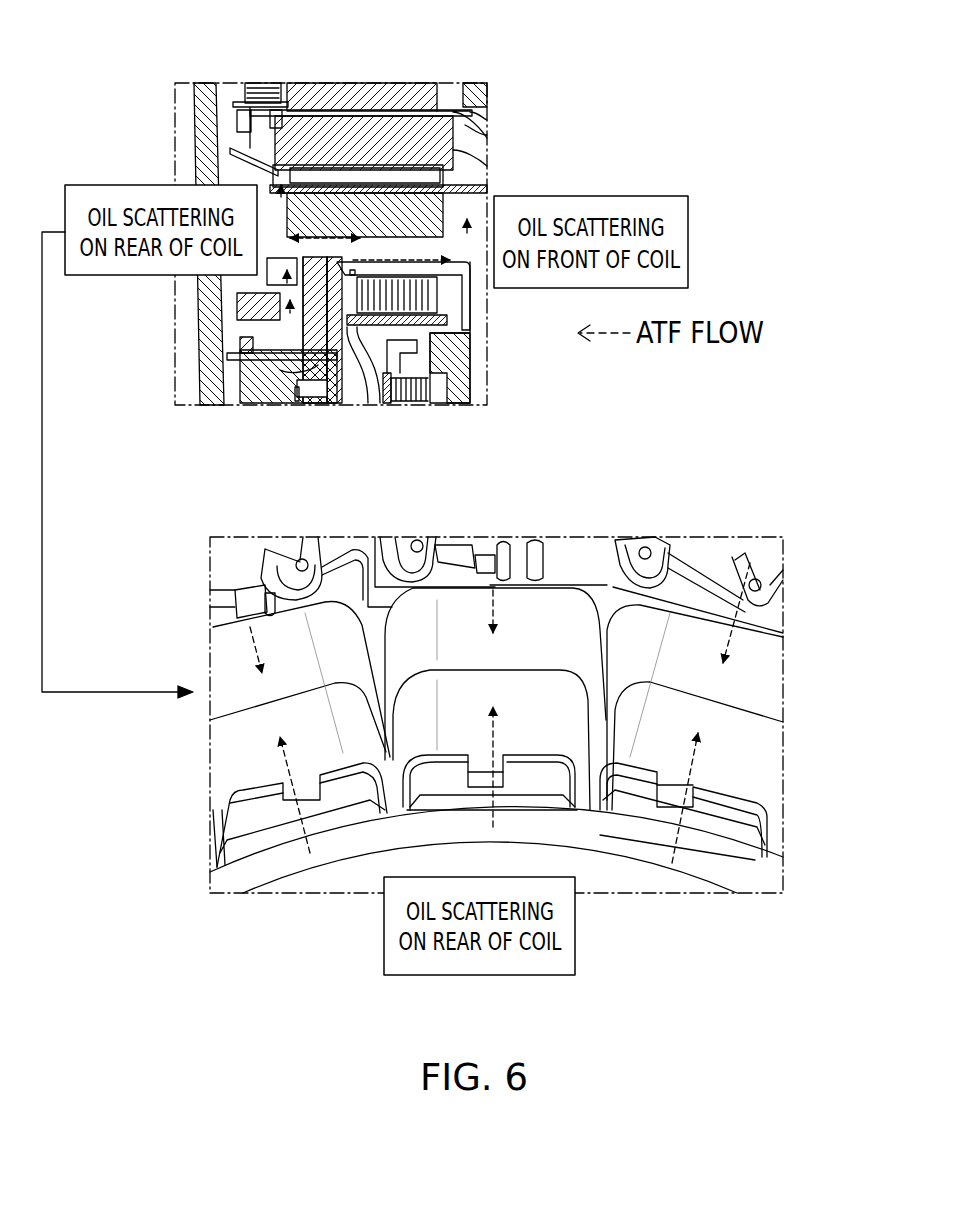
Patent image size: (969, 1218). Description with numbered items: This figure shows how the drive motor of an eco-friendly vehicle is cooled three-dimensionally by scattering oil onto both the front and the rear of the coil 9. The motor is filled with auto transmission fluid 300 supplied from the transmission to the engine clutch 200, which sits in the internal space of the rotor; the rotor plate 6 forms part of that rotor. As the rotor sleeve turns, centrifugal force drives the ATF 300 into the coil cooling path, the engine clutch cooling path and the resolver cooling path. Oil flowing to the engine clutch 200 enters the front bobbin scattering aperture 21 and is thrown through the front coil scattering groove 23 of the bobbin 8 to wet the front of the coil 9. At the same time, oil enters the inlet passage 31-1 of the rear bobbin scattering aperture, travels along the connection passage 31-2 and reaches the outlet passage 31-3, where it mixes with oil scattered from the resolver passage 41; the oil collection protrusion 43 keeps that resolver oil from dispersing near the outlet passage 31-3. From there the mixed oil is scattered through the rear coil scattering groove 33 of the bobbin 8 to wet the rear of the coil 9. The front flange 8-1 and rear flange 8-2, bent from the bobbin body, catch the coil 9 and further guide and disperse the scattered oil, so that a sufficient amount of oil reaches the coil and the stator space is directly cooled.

The rotor plate 6 is at (270, 385).
The bobbin 8 is at (533, 587).
The front flange 8-1 is at (677, 560).
The rear flange 8-2 is at (243, 822).
The coil 9 is at (362, 140).
The front bobbin scattering aperture 21 is at (452, 137).
The front coil scattering groove 23 is at (468, 165).
The inlet passage 31-1 is at (377, 387).
The connection passage 31-2 is at (327, 123).
The outlet passage 31-3 is at (233, 128).
The rear coil scattering groove 33 is at (288, 250).
The resolver passage 41 is at (300, 403).
The oil collection protrusion 43 is at (300, 245).
The engine clutch 200 is at (447, 352).
The auto transmission fluid (ATF) 300 is at (300, 395).